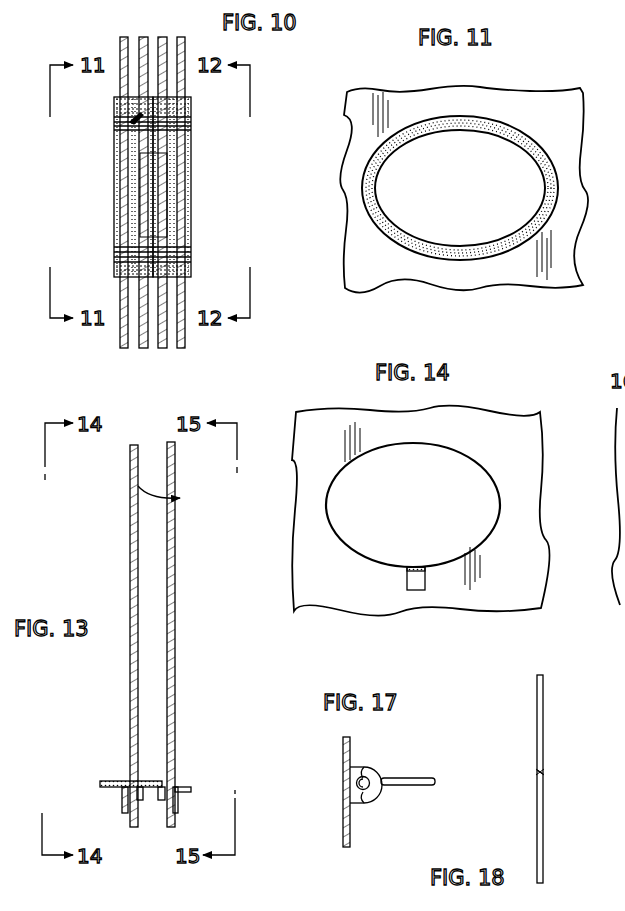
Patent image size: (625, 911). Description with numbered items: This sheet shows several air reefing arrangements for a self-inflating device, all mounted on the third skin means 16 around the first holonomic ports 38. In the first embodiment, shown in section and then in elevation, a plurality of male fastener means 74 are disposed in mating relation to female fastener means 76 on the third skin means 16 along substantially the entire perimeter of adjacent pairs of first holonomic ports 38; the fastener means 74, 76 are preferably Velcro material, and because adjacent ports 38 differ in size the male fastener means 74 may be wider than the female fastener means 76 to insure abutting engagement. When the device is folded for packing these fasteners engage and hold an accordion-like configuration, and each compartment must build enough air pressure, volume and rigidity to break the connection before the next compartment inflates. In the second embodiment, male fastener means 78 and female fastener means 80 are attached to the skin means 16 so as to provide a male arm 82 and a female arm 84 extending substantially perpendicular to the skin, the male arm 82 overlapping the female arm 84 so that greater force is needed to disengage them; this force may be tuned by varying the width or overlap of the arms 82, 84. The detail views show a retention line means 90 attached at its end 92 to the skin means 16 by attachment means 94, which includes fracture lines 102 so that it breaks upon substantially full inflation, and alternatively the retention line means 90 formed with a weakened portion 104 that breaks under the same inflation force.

In FIG. 10, the third skin means 16 is at (181, 37).
In FIG. 11, the third skin means 16 is at (408, 97).
In FIG. 13, the third skin means 16 is at (168, 450).
In FIG. 14, the third skin means 16 is at (492, 417).
In FIG. 17, the third skin means 16 is at (342, 753).
In FIG. 10, the first holonomic ports 38 is at (134, 119).
In FIG. 11, the first holonomic ports 38 is at (468, 195).
In FIG. 13, the first holonomic ports 38 is at (168, 778).
In FIG. 14, the first holonomic ports 38 is at (424, 516).
In FIG. 10, the male fastener means 74 is at (135, 197).
In FIG. 11, the male fastener means 74 is at (364, 195).
In FIG. 10, the female fastener means 76 is at (180, 197).
In FIG. 13, the male fastener means 78 is at (122, 798).
In FIG. 14, the male fastener means 78 is at (407, 584).
In FIG. 13, the female fastener means 80 is at (178, 805).
In FIG. 13, the male arm 82 is at (138, 781).
In FIG. 14, the male arm 82 is at (418, 574).
In FIG. 13, the female arm 84 is at (183, 787).
In FIG. 17, the retention line means 90 is at (433, 786).
In FIG. 18, the retention line means 90 is at (536, 700).
In FIG. 17, the end 92 is at (383, 786).
In FIG. 17, the attachment means 94 is at (380, 768).
In FIG. 17, the fracture lines 102 is at (364, 767).
In FIG. 18, the weakened portion 104 is at (543, 773).